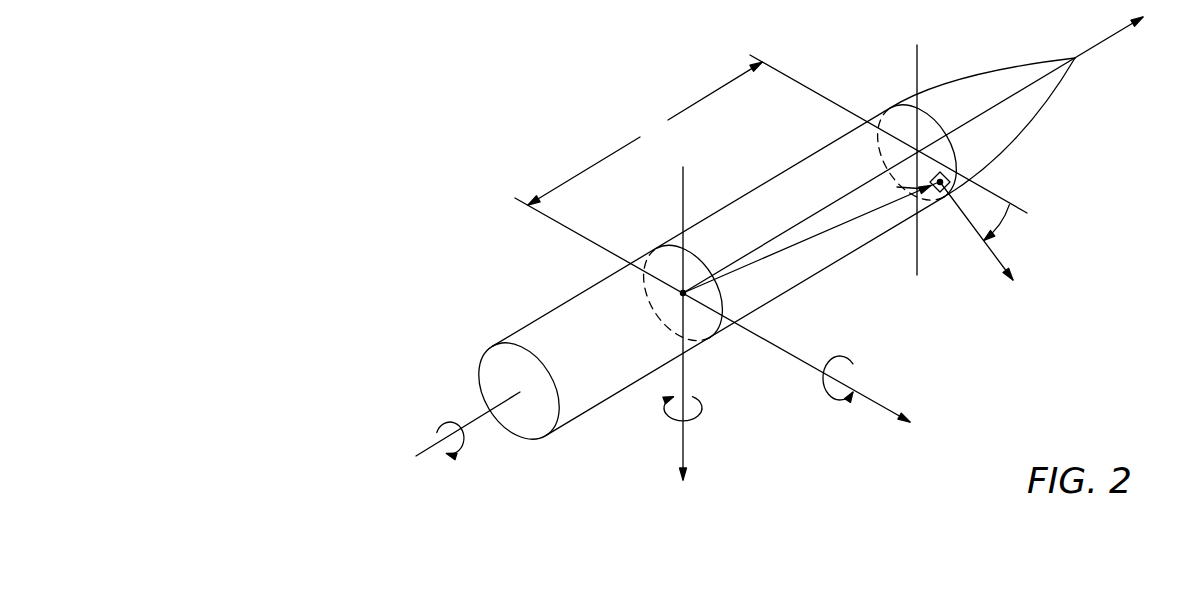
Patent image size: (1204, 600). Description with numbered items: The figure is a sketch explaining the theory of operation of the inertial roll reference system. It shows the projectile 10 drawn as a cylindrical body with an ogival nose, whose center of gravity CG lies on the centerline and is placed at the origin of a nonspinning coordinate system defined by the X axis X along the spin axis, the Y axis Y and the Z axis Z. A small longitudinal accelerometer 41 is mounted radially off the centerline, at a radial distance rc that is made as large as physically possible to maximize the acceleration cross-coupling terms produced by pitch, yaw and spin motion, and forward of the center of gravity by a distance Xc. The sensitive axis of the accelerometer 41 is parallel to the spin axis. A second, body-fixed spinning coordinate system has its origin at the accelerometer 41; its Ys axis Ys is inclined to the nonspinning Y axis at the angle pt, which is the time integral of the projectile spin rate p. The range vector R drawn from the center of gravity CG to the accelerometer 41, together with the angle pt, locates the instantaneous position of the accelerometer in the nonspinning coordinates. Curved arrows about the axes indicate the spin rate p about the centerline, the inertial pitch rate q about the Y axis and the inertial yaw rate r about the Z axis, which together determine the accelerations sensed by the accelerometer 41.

The projectile 10 is at (542, 319).
The longitudinal accelerometer 41 is at (949, 186).
The X axis X is at (789, 228).
The Y axis Y is at (721, 315).
The Z axis Z is at (682, 339).
The distance forward of the center of gravity Xc is at (777, 160).
The center of gravity CG is at (672, 299).
The range vector R is at (764, 259).
The radial distance rc is at (896, 197).
The Ys axis Ys is at (979, 245).
The angle pt is at (1001, 225).
The projectile spin rate p is at (450, 449).
The projectile inertial pitch rate q is at (848, 361).
The projectile inertial yaw rate r is at (701, 409).